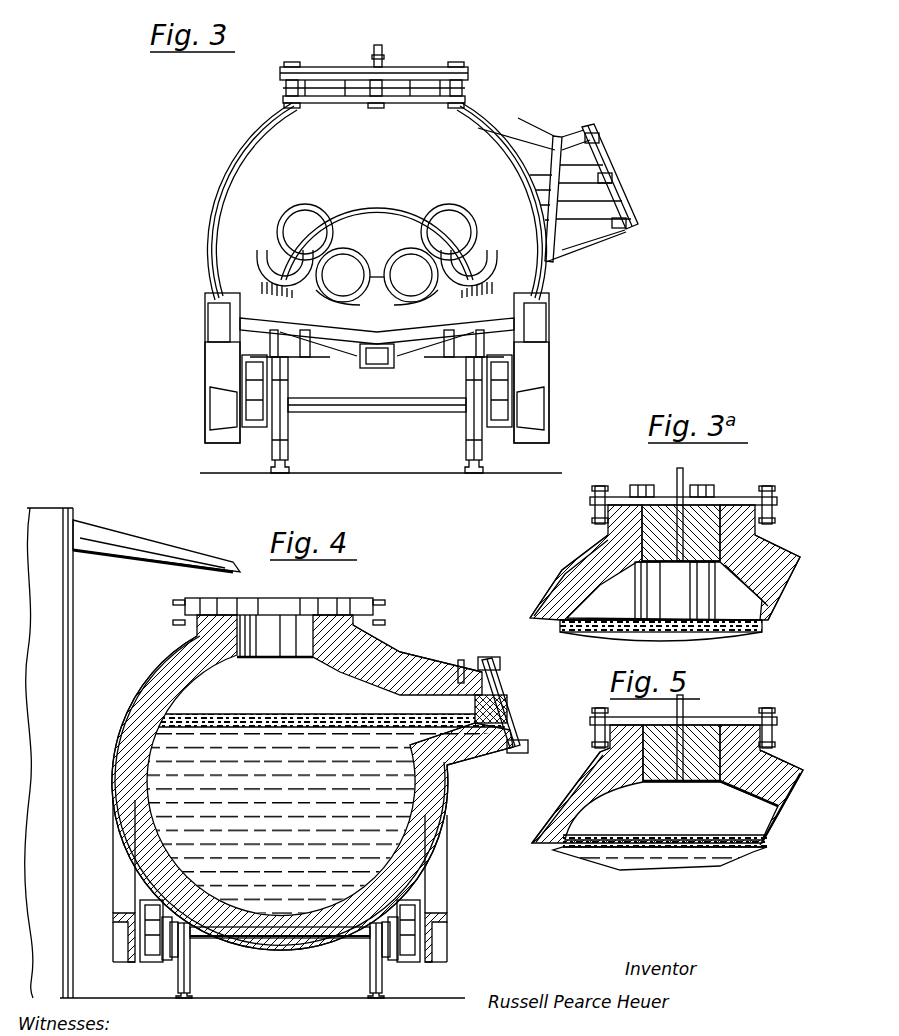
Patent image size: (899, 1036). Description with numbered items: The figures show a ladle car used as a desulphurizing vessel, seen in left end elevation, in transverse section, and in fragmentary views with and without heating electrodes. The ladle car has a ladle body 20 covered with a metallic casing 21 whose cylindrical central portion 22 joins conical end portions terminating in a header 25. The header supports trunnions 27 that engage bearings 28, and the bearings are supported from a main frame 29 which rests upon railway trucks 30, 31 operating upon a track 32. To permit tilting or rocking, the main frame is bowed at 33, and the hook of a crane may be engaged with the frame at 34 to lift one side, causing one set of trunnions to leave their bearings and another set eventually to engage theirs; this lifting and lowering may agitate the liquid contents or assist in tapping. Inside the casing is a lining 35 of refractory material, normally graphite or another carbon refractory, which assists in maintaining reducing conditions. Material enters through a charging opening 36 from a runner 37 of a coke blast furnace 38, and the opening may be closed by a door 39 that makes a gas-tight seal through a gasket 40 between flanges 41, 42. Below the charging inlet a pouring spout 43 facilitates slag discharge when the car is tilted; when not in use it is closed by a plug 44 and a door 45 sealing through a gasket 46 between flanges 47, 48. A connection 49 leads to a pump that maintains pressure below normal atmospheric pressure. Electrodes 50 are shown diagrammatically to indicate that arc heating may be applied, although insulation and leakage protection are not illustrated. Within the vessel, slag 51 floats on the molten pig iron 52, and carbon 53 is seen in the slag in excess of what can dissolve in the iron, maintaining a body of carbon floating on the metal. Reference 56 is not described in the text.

In FIG. 3, the ladle body 20 is at (222, 220).
In FIG. 4, the ladle body 20 is at (282, 925).
In FIG. 3A, the ladle body 20 is at (548, 582).
In FIG. 5, the ladle body 20 is at (555, 845).
In FIG. 3, the metallic casing 21 is at (236, 170).
In FIG. 4, the metallic casing 21 is at (152, 676).
In FIG. 3A, the metallic casing 21 is at (562, 568).
In FIG. 5, the metallic casing 21 is at (560, 810).
In FIG. 3, the cylindrical central portion 22 is at (478, 128).
In FIG. 4, the cylindrical central portion 22 is at (420, 838).
In FIG. 3A, the cylindrical central portion 22 is at (752, 585).
In FIG. 5, the cylindrical central portion 22 is at (760, 820).
In FIG. 3, the header 25 is at (392, 193).
In FIG. 3, the trunnion 27 is at (305, 232).
In FIG. 3, the bearing 28 is at (235, 262).
In FIG. 3, the main frame 29 is at (218, 368).
In FIG. 4, the main frame 29 is at (128, 962).
In FIG. 3, the railway truck 30 is at (293, 408).
In FIG. 4, the railway truck 30 is at (280, 958).
In FIG. 3, the railway truck 31 is at (377, 391).
In FIG. 4, the railway truck 31 is at (197, 935).
In FIG. 3, the track 32 is at (283, 478).
In FIG. 4, the track 32 is at (188, 998).
In FIG. 3, the bowed portion of main frame 33 is at (213, 350).
In FIG. 4, the bowed portion of main frame 33 is at (118, 888).
In FIG. 3, the crane hook engagement point 34 is at (212, 437).
In FIG. 4, the crane hook engagement point 34 is at (118, 962).
In FIG. 4, the lining 35 is at (138, 722).
In FIG. 3A, the lining 35 is at (542, 605).
In FIG. 5, the lining 35 is at (592, 790).
In FIG. 4, the charging opening 36 is at (305, 622).
In FIG. 5, the charging opening 36 is at (668, 778).
In FIG. 4, the runner 37 is at (175, 548).
In FIG. 4, the coke blast furnace 38 is at (72, 623).
In FIG. 3, the door 39 is at (312, 68).
In FIG. 3A, the door 39 is at (715, 505).
In FIG. 5, the door 39 is at (700, 765).
In FIG. 3, the gasket 40 is at (470, 73).
In FIG. 3A, the gasket 40 is at (600, 497).
In FIG. 5, the gasket 40 is at (768, 716).
In FIG. 3, the flange 41 is at (282, 76).
In FIG. 3A, the flange 41 is at (590, 500).
In FIG. 5, the flange 41 is at (592, 715).
In FIG. 3, the flange 42 is at (282, 98).
In FIG. 4, the flange 42 is at (190, 603).
In FIG. 3A, the flange 42 is at (598, 512).
In FIG. 5, the flange 42 is at (598, 730).
In FIG. 3, the pouring spout 43 is at (585, 205).
In FIG. 4, the pouring spout 43 is at (483, 745).
In FIG. 4, the plug 44 is at (512, 705).
In FIG. 3, the door 45 is at (600, 165).
In FIG. 4, the door 45 is at (505, 690).
In FIG. 3, the gasket 46 is at (622, 230).
In FIG. 4, the gasket 46 is at (516, 755).
In FIG. 3, the flange 47 is at (588, 132).
In FIG. 4, the flange 47 is at (492, 657).
In FIG. 3, the flange 48 is at (562, 136).
In FIG. 4, the flange 48 is at (461, 660).
In FIG. 3, the connection 49 is at (382, 52).
In FIG. 3A, the connection 49 is at (684, 472).
In FIG. 5, the connection 49 is at (677, 700).
In FIG. 3A, the electrodes 50 is at (636, 600).
In FIG. 4, the slag 51 is at (283, 714).
In FIG. 3A, the slag 51 is at (745, 626).
In FIG. 5, the slag 51 is at (655, 838).
In FIG. 4, the molten pig iron 52 is at (310, 811).
In FIG. 3A, the molten pig iron 52 is at (690, 634).
In FIG. 5, the molten pig iron 52 is at (672, 856).
In FIG. 4, the carbon 53 is at (246, 712).
In FIG. 3A, the carbon 53 is at (580, 628).
In FIG. 5, the carbon 53 is at (605, 850).
In FIG. 3A, the plate 56 is at (722, 563).